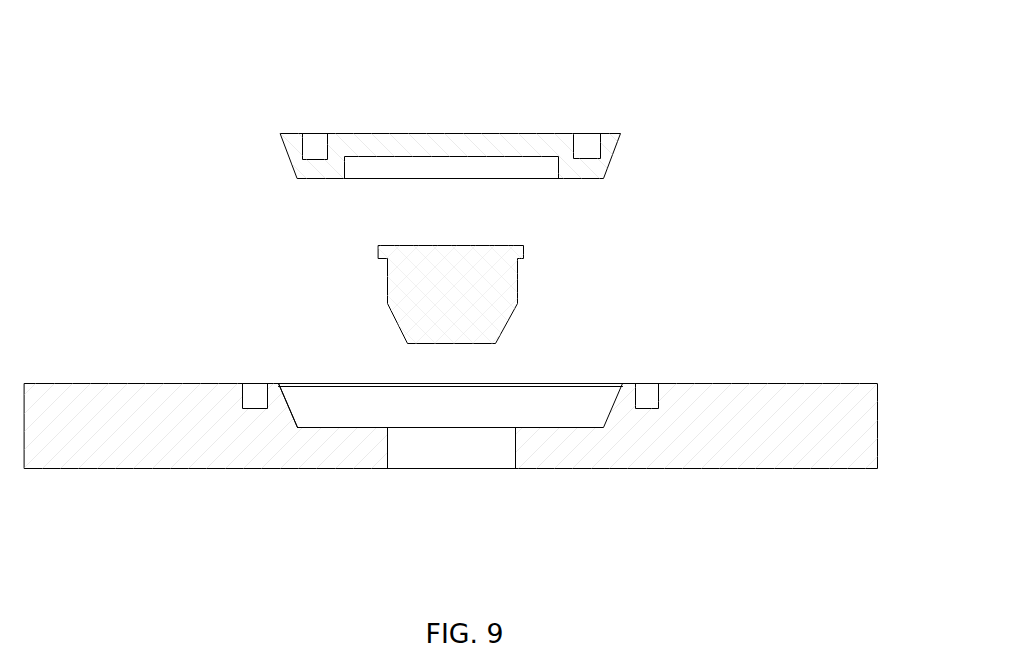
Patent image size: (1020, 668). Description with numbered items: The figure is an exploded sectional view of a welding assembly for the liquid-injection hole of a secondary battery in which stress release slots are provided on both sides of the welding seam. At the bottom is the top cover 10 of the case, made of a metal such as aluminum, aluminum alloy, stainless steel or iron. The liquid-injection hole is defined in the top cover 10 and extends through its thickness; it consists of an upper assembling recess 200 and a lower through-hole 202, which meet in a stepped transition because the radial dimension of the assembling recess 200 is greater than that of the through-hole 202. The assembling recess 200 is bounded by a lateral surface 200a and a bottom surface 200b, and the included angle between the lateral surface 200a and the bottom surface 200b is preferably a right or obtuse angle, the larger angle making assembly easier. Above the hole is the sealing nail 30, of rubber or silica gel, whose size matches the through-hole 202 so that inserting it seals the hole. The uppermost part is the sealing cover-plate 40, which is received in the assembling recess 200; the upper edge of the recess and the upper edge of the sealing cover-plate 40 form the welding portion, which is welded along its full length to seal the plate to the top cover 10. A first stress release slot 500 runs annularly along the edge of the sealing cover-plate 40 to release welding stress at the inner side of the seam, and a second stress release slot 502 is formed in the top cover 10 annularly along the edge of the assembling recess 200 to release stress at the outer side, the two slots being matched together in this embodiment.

The top cover of case 10 is at (728, 412).
The sealing nail 30 is at (487, 307).
The sealing cover-plate 40 is at (509, 147).
The first stress release slot 500 is at (318, 148).
The second stress release slot 502 is at (258, 395).
The assembling recess 200 is at (558, 403).
The lateral surface 200a is at (291, 405).
The bottom surface 200b is at (373, 427).
The through-hole 202 is at (458, 457).